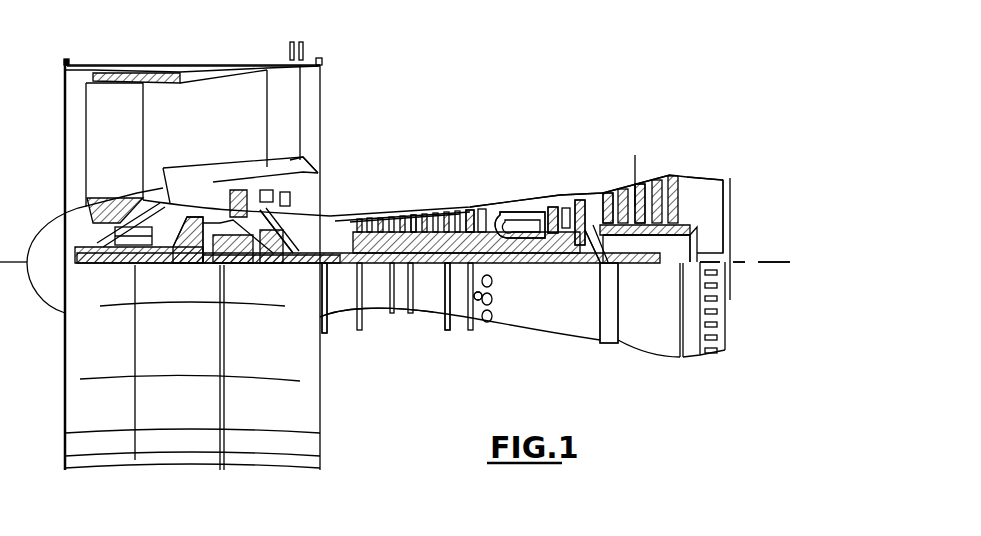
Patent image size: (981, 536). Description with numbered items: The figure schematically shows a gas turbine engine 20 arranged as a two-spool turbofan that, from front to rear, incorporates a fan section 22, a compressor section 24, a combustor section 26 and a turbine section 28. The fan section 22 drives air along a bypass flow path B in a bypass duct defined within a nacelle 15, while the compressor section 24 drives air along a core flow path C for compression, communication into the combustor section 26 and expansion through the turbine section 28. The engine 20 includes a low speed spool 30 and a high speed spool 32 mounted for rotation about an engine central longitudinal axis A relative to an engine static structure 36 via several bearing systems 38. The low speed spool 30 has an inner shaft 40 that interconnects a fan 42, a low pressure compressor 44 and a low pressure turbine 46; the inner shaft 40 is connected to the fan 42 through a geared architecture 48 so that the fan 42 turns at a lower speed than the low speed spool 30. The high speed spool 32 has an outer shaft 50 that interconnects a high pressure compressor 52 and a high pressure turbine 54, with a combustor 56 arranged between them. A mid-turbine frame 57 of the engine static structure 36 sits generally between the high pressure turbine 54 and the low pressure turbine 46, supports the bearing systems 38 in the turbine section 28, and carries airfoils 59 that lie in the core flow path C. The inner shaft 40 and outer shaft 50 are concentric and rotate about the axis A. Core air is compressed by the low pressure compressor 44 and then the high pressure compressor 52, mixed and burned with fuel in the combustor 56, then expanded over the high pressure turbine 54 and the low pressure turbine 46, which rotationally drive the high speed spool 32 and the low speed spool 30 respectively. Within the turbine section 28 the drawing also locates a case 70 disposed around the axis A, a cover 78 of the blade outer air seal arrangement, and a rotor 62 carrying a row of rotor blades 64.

The gas turbine engine 20 is at (513, 100).
The fan section 22 is at (143, 60).
The nacelle 15 is at (193, 63).
The fan 42 is at (130, 156).
The bypass flow path B is at (166, 117).
The core flow path C is at (200, 192).
The low pressure compressor 44 is at (300, 161).
The compressor section 24 is at (352, 192).
The combustor section 26 is at (507, 190).
The high pressure compressor 52 is at (418, 212).
The high speed spool 32 is at (460, 222).
The high pressure turbine 54 is at (553, 226).
The combustor 56 is at (510, 222).
The mid-turbine frame 57 is at (577, 195).
The cover 78 is at (595, 195).
The case 70 is at (626, 175).
The turbine section 28 is at (618, 158).
The low pressure turbine 46 is at (638, 207).
The rotor blades 64 is at (684, 197).
The airfoils 59 is at (604, 231).
The rotor 62 is at (660, 262).
The bearing systems 38 is at (290, 258).
The outer shaft 50 is at (520, 257).
The engine static structure 36 is at (457, 327).
The low speed spool 30 is at (430, 266).
The inner shaft 40 is at (335, 270).
The geared architecture 48 is at (193, 252).
The engine central longitudinal axis A is at (790, 262).